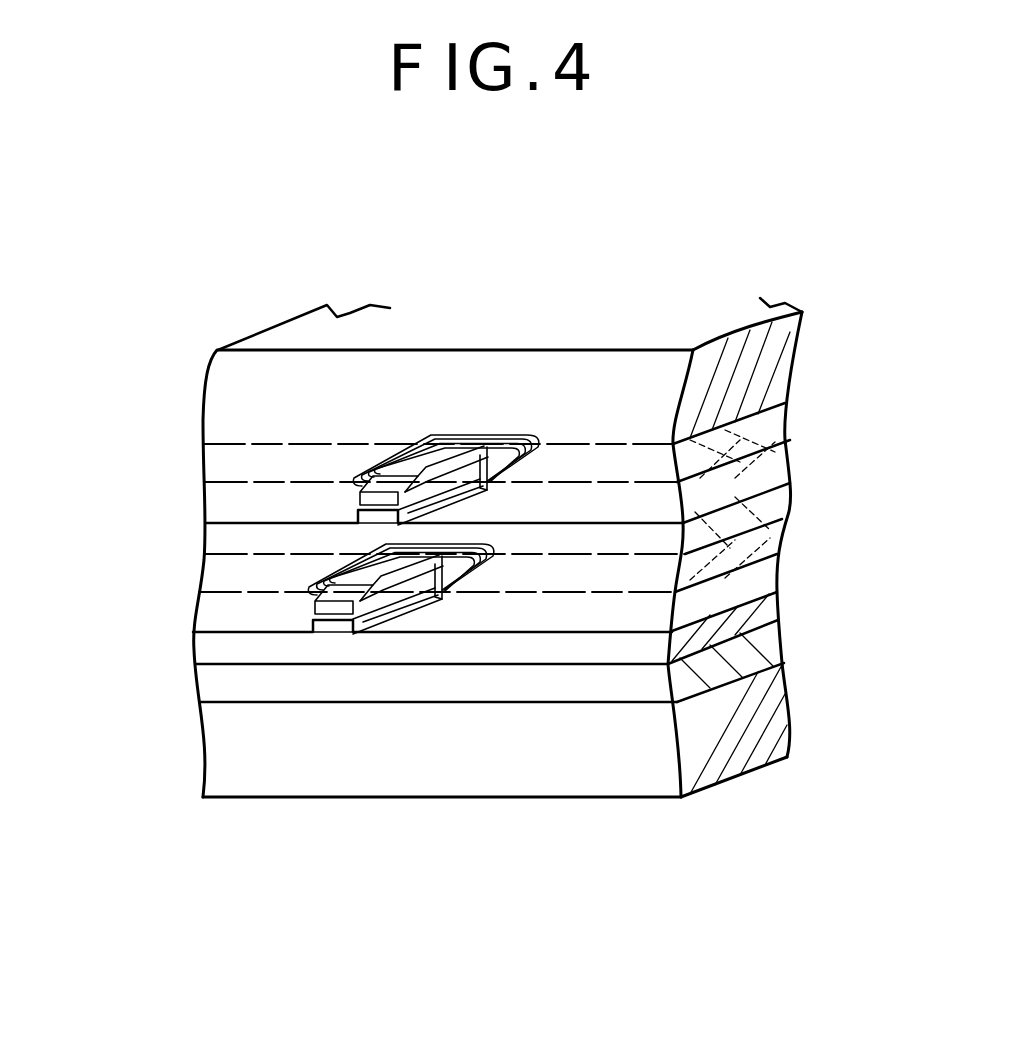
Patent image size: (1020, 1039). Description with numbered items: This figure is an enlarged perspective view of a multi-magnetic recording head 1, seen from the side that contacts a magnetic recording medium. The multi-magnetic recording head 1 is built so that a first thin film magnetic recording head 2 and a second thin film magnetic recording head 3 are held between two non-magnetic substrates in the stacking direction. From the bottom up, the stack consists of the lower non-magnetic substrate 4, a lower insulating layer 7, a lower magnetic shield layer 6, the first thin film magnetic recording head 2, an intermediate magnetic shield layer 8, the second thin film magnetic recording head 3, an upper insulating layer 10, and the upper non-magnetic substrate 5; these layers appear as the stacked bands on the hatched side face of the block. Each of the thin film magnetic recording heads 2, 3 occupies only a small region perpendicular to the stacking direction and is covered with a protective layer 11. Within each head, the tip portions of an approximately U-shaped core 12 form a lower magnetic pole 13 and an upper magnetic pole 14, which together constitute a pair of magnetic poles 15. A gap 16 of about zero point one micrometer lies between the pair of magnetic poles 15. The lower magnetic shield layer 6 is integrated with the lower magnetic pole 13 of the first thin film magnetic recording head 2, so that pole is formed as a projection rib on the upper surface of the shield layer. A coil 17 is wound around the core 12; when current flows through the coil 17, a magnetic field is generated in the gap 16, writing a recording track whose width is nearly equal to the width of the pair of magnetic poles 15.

The multi-magnetic recording head 1 is at (638, 278).
The first thin film magnetic recording head 2 is at (188, 557).
The second thin film magnetic recording head 3 is at (188, 435).
The lower non-magnetic substrate 4 is at (733, 747).
The upper non-magnetic substrate 5 is at (760, 350).
The lower magnetic shield layer 6 is at (763, 617).
The lower insulating layer 7 is at (760, 645).
The intermediate magnetic shield layer 8 is at (803, 517).
The upper insulating layer 10 is at (797, 420).
The protective layer 11 is at (797, 462).
The core 12 is at (424, 437).
The lower magnetic pole 13 is at (358, 517).
The upper magnetic pole 14 is at (358, 493).
The pair of magnetic poles 15 is at (231, 611).
The gap 16 is at (372, 614).
The coil 17 is at (490, 438).